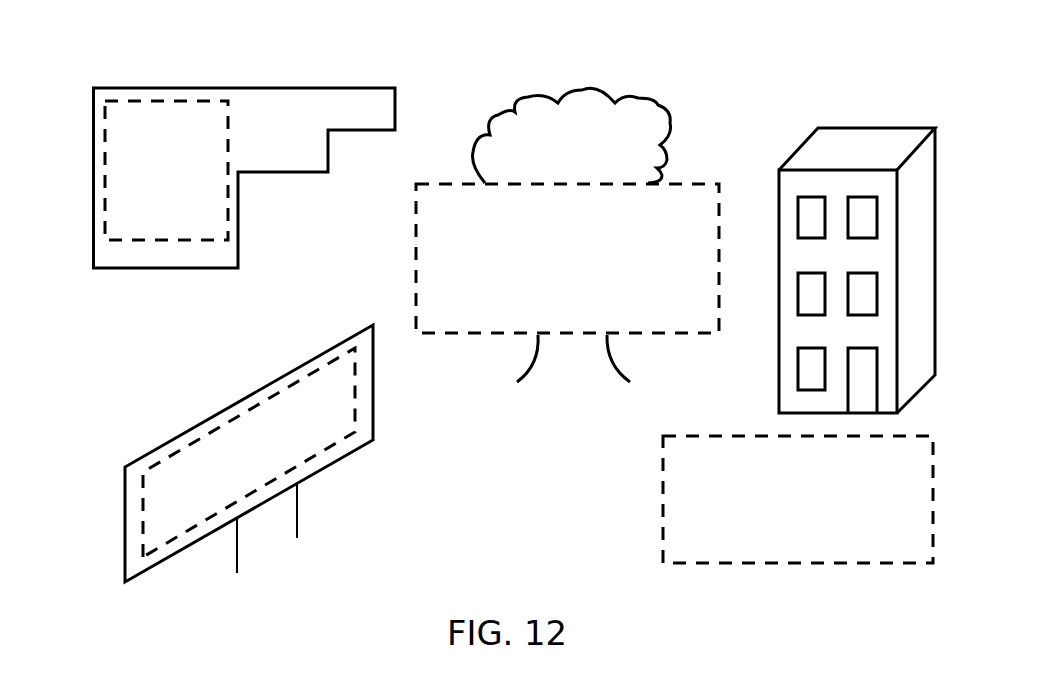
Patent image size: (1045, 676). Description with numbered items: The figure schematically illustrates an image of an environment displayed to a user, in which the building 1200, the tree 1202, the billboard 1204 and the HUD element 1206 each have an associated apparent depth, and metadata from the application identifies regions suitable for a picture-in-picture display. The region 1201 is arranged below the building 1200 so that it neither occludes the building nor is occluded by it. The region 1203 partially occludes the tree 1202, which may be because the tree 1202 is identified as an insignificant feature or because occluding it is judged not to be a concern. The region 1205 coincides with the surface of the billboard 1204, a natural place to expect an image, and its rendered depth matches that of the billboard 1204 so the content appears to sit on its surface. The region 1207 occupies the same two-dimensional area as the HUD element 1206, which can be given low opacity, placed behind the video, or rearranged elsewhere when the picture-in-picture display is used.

The building 1200 is at (878, 125).
The region 1201 is at (833, 512).
The tree 1202 is at (657, 103).
The region 1203 is at (603, 274).
The billboard 1204 is at (123, 503).
The region 1205 is at (284, 470).
The HUD element 1206 is at (320, 87).
The region 1207 is at (132, 183).